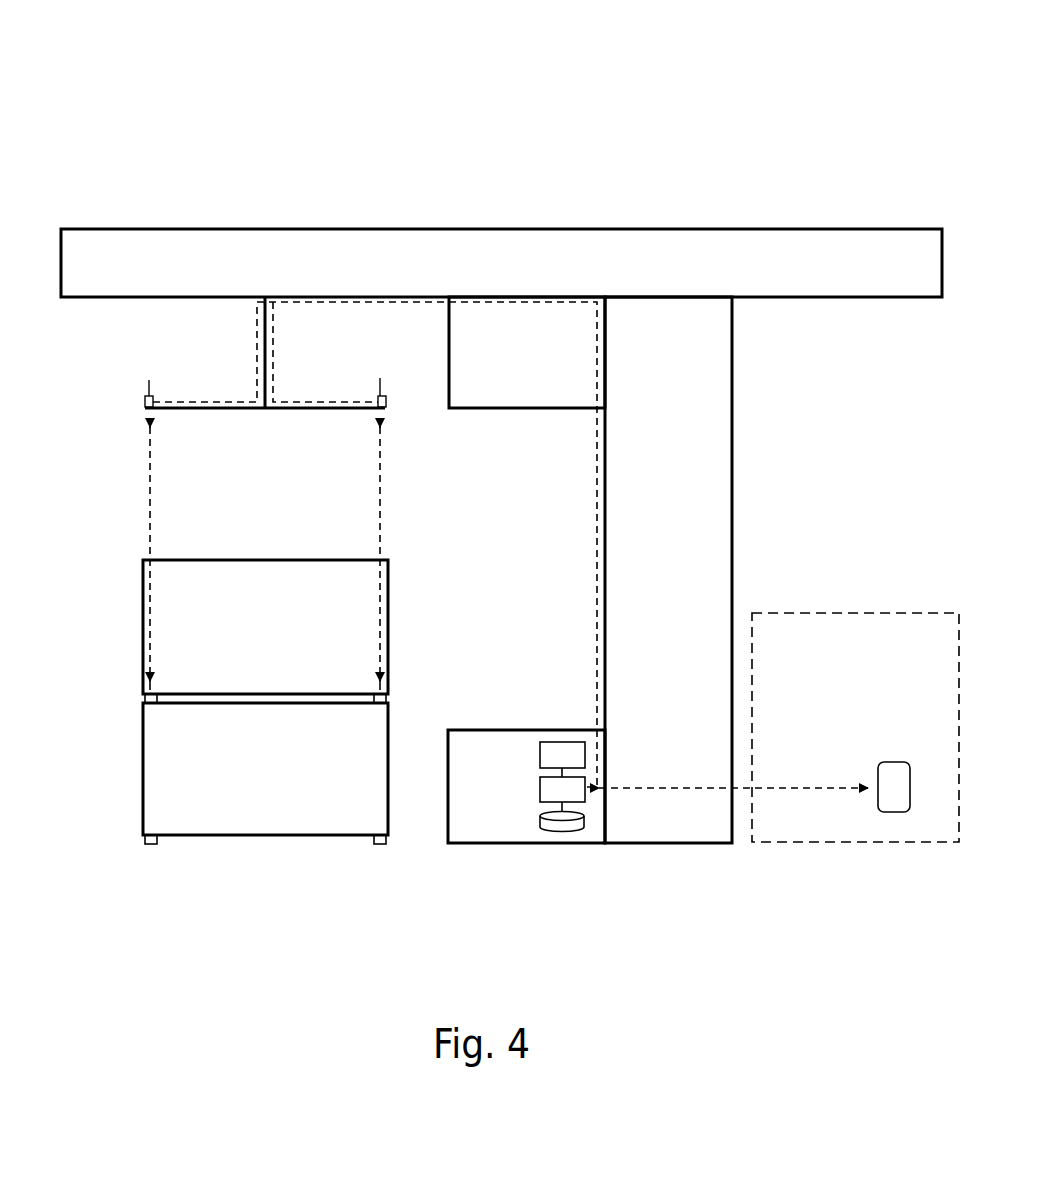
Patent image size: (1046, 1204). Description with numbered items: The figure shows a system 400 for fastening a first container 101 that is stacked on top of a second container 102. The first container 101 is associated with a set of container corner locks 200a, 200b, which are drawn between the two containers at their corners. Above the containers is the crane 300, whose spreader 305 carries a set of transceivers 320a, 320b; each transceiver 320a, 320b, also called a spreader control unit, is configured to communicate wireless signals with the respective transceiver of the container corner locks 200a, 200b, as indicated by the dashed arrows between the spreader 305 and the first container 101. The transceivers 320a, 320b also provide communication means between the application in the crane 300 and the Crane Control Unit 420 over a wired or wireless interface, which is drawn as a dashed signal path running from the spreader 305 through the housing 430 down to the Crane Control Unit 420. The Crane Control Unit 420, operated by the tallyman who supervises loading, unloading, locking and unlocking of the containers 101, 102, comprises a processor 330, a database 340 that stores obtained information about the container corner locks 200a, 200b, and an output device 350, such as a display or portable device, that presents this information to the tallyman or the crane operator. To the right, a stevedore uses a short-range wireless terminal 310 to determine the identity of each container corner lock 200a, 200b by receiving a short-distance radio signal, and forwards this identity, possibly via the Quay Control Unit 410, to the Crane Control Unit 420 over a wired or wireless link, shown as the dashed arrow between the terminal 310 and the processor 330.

The system 400 is at (826, 74).
The crane 300 is at (472, 276).
The transceiver 320a is at (147, 381).
The transceiver 320b is at (385, 395).
The spreader 305 is at (205, 412).
The upper housing part 430 is at (457, 410).
The Crane Control Unit 420 is at (463, 730).
The output device 350 is at (582, 752).
The processor 330 is at (545, 792).
The database 340 is at (552, 828).
The Quay Control Unit 410 is at (825, 612).
The short-range wireless terminal 310 is at (888, 800).
The first container 101 is at (282, 641).
The second container 102 is at (287, 784).
The container corner lock 200a is at (147, 697).
The container corner lock 200b is at (388, 697).